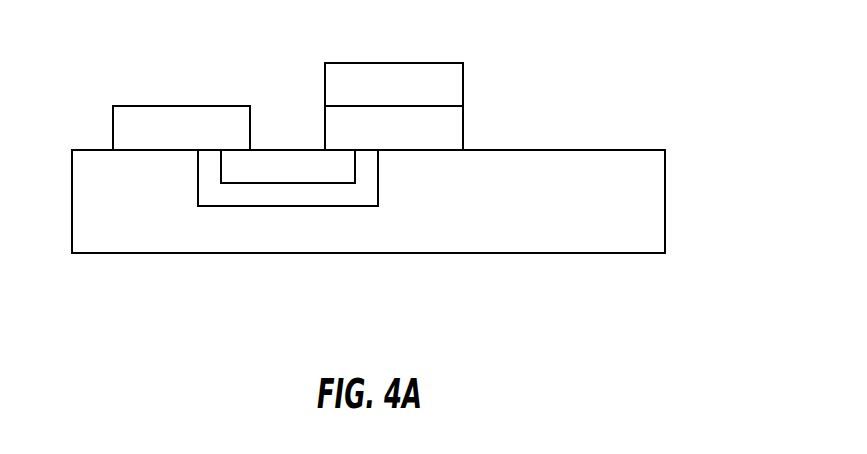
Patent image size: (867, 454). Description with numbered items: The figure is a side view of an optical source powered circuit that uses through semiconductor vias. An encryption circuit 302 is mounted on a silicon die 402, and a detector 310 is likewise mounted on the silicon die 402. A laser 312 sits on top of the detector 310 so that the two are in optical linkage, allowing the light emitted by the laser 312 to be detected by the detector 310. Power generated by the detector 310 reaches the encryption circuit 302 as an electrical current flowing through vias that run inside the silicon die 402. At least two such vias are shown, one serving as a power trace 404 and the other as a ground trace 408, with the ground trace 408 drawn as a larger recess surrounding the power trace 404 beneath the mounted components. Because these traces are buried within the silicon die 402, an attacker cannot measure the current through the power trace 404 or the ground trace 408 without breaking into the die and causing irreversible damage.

The encryption circuit 302 is at (112, 122).
The detector 310 is at (463, 122).
The laser 312 is at (463, 74).
The silicon die 402 is at (665, 174).
The power trace 404 is at (355, 158).
The ground trace 408 is at (198, 188).